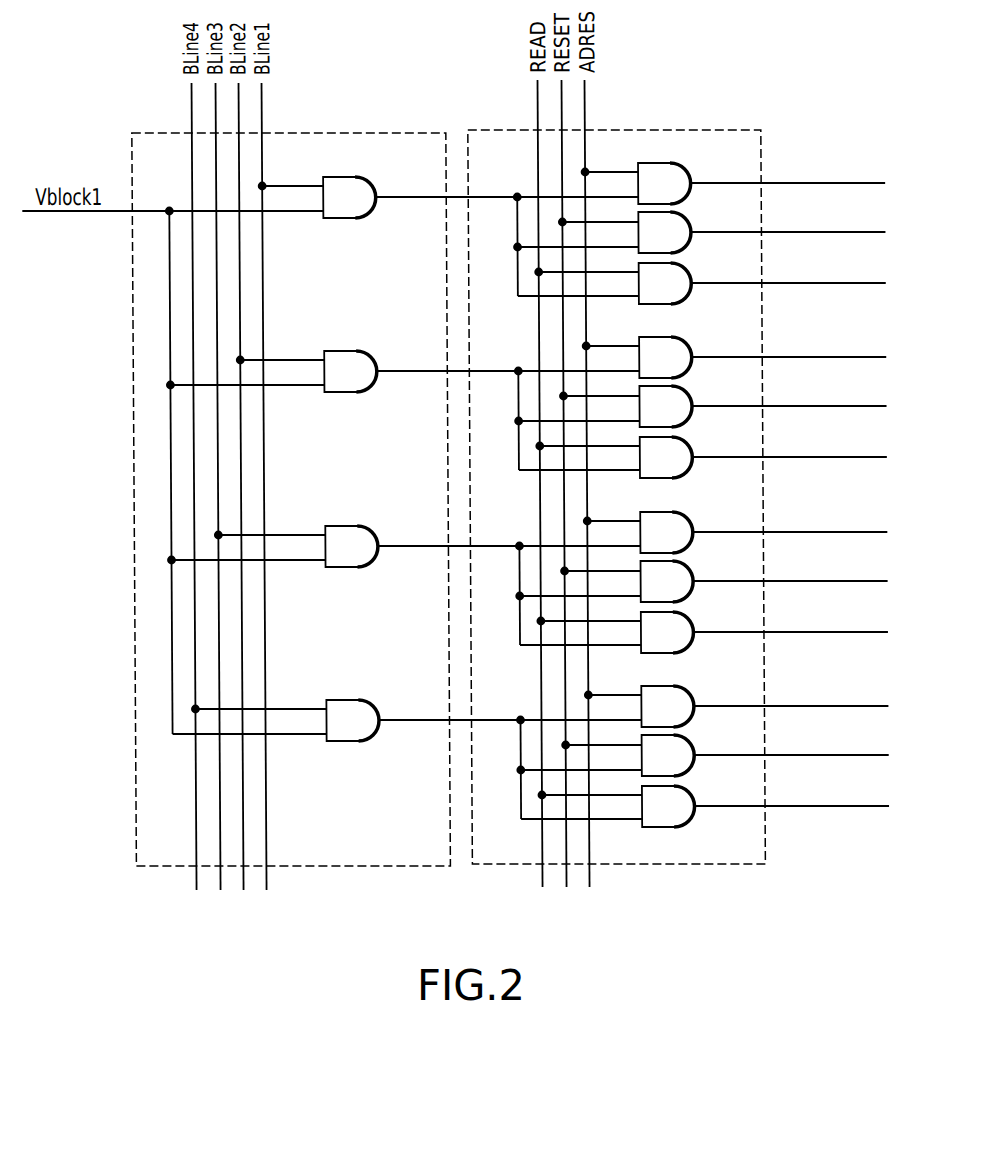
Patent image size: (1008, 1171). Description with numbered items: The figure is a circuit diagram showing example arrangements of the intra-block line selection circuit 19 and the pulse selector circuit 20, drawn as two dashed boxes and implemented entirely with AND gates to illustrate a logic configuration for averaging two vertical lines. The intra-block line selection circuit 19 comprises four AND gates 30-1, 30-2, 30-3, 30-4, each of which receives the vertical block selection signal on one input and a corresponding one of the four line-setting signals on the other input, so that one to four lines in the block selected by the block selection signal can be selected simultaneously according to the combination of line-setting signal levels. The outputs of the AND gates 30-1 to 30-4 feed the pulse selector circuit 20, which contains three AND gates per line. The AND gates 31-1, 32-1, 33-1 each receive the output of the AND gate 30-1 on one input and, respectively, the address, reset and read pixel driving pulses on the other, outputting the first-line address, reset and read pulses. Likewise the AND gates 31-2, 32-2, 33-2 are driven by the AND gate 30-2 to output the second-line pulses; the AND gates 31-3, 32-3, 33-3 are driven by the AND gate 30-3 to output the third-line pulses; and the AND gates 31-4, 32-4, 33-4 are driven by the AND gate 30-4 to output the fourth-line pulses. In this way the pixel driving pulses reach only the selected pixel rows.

The intra-block line selection circuit 19 is at (302, 132).
The pulse selector circuit 20 is at (631, 130).
The AND gate 30-1 is at (345, 218).
The AND gate 30-2 is at (345, 392).
The AND gate 30-3 is at (345, 567).
The AND gate 30-4 is at (345, 741).
The AND gate 31-1 is at (672, 165).
The AND gate 31-2 is at (672, 339).
The AND gate 31-3 is at (672, 514).
The AND gate 31-4 is at (672, 688).
The AND gate 32-1 is at (672, 214).
The AND gate 32-2 is at (672, 388).
The AND gate 32-3 is at (672, 563).
The AND gate 32-4 is at (672, 737).
The AND gate 33-1 is at (672, 265).
The AND gate 33-2 is at (672, 439).
The AND gate 33-3 is at (672, 614).
The AND gate 33-4 is at (672, 788).